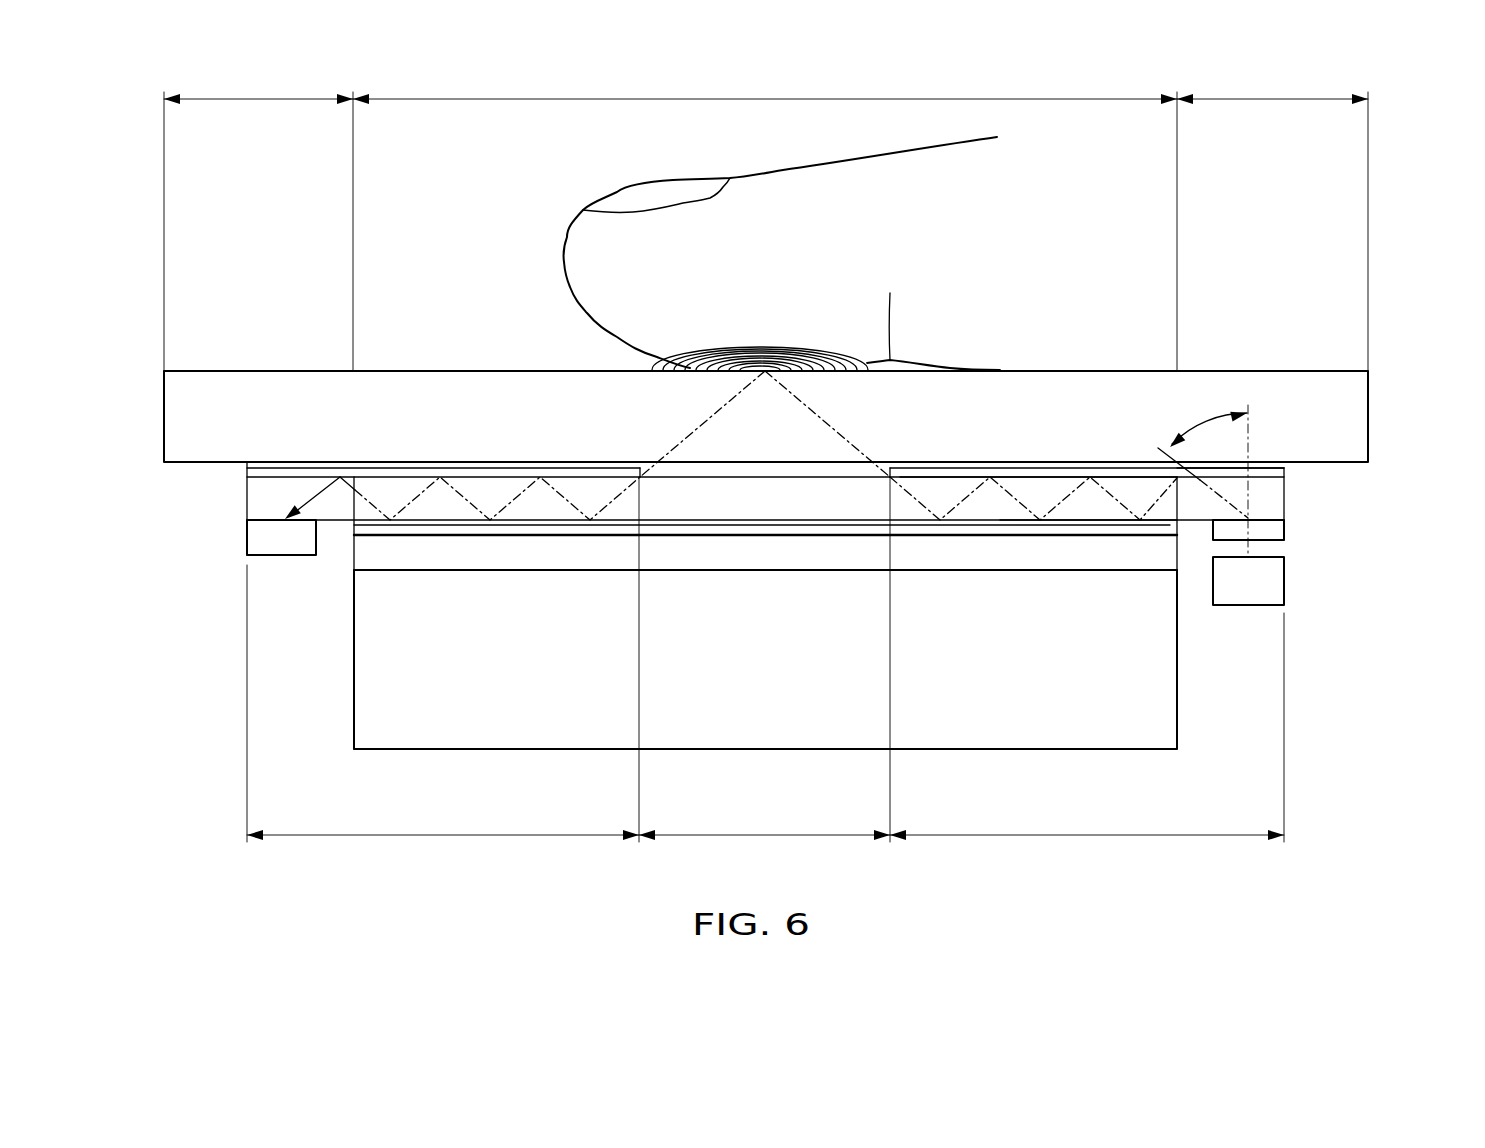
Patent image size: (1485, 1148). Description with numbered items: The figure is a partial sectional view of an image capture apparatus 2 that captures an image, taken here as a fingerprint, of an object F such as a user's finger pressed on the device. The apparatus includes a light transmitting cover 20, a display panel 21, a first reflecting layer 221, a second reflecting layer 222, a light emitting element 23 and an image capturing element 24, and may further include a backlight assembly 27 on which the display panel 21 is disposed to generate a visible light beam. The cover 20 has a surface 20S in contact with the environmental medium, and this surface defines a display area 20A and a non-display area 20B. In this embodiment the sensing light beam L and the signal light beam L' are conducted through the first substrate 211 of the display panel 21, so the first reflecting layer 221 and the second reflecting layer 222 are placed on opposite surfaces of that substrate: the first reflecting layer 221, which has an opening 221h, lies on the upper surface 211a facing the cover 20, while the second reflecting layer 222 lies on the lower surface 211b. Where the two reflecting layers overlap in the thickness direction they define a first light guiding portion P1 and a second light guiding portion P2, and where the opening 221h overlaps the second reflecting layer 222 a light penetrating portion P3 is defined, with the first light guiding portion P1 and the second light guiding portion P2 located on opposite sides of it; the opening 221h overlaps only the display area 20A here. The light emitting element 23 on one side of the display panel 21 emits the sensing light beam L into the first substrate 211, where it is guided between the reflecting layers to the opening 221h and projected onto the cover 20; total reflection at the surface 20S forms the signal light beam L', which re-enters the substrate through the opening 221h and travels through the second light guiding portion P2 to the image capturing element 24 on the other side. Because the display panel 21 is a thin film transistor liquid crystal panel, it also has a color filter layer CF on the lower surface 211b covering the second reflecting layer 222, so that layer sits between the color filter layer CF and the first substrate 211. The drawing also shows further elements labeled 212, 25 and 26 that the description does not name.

The image capture apparatus 2 is at (1415, 354).
The light transmitting cover 20 is at (192, 420).
The surface 20S is at (415, 353).
The display area 20A is at (765, 216).
The non-display area 20B is at (766, 216).
The object F is at (593, 280).
The sensing light beam L is at (845, 424).
The signal light beam L' is at (715, 424).
The display panel 21 is at (173, 580).
The first substrate 211 is at (360, 510).
The upper surface 211a is at (1040, 450).
The lower surface 211b is at (1098, 536).
The substrate 212 is at (368, 550).
The first reflecting layer 221 is at (247, 473).
The opening 221h is at (643, 460).
The second reflecting layer 222 is at (1165, 525).
The color filter layer CF is at (413, 532).
The light emitting element 23 is at (1267, 580).
The image capturing element 24 is at (263, 537).
The adhesive layer 25 is at (1275, 467).
The reflective member 26 is at (1267, 528).
The backlight assembly 27 is at (1127, 720).
The first light guiding portion P1 is at (1087, 727).
The second light guiding portion P2 is at (443, 703).
The light penetrating portion P3 is at (764, 659).